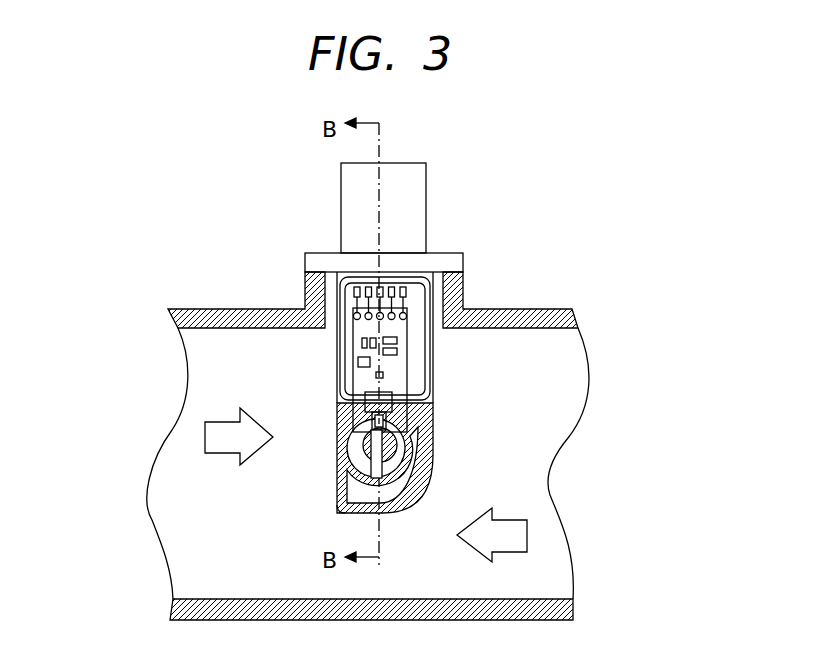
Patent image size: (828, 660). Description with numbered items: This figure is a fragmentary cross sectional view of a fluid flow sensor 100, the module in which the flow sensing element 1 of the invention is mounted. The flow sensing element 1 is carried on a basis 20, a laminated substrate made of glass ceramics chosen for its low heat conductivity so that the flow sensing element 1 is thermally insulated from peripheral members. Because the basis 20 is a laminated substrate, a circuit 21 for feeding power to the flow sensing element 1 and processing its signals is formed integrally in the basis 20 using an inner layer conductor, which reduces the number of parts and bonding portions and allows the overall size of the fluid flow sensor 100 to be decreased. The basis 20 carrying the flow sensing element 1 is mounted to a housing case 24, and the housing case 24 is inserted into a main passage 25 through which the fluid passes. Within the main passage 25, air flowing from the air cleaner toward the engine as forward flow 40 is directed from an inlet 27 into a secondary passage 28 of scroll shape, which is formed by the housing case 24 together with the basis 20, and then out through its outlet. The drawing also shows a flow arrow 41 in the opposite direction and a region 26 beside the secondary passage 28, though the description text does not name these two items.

The flow sensing element 1 is at (432, 402).
The basis 20 is at (362, 400).
The circuit 21 is at (378, 347).
The housing case 24 is at (410, 320).
The main passage 25 is at (528, 368).
The chamber 26 is at (412, 446).
The inlet 27 is at (350, 492).
The secondary passage 28 is at (385, 460).
The forward flow 40 is at (215, 425).
The reverse flow direction 41 is at (513, 537).
The fluid flow sensor 100 is at (407, 260).